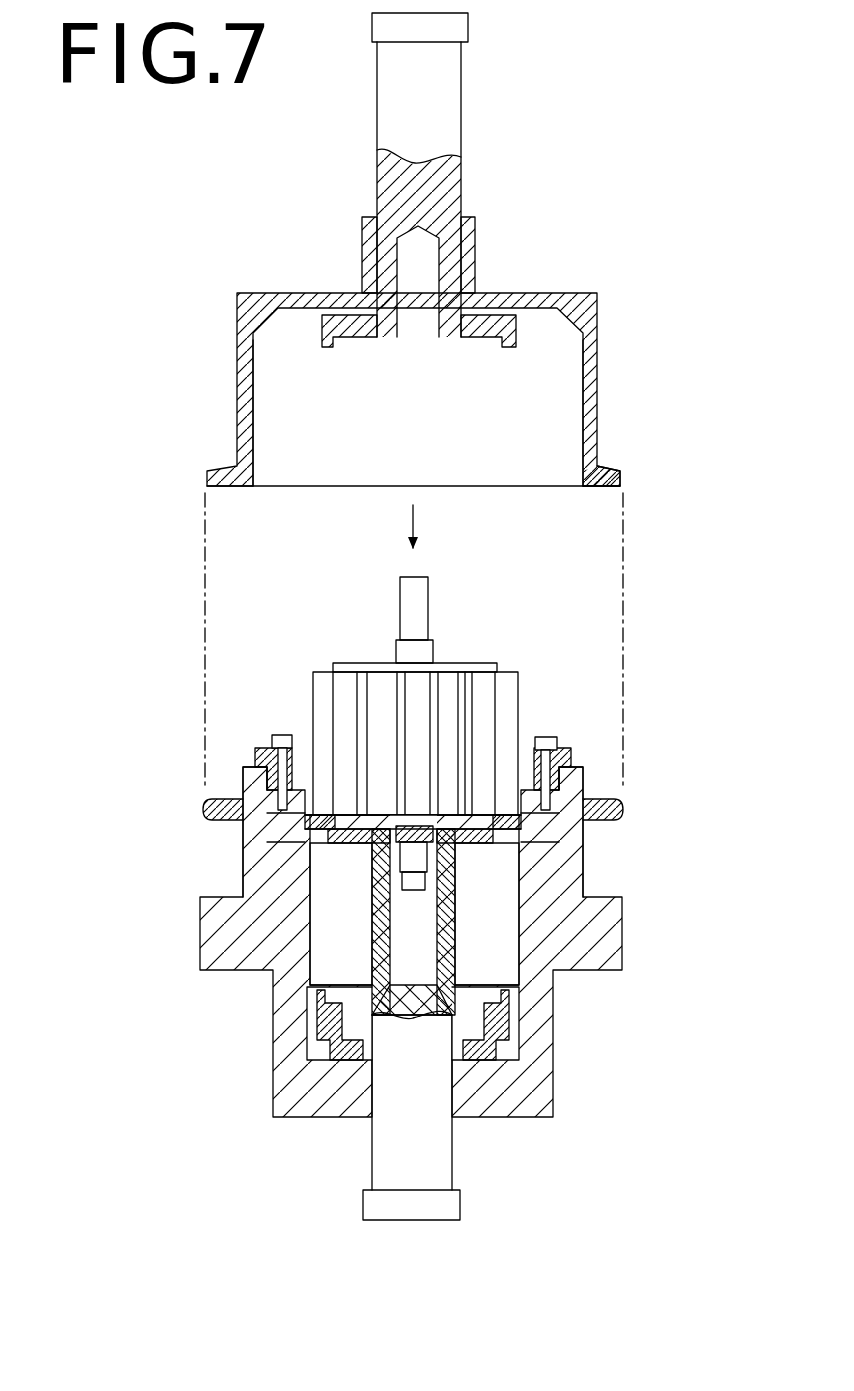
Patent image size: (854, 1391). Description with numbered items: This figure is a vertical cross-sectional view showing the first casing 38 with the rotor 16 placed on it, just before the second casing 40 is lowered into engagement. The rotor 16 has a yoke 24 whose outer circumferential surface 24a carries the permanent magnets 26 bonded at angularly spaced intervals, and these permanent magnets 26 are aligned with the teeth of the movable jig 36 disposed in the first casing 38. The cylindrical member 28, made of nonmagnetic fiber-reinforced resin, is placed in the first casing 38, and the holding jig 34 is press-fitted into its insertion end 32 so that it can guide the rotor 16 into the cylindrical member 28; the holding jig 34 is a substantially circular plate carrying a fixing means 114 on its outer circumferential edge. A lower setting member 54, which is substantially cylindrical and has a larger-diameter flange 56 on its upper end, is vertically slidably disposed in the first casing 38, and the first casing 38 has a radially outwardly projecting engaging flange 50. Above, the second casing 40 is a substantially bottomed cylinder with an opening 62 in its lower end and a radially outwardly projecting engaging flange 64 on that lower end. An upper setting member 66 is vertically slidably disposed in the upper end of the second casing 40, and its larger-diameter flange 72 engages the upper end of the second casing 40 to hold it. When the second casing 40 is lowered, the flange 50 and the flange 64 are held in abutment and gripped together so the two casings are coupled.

The upper setting member 66 is at (448, 119).
The second casing 40 is at (622, 316).
The engaging flange 64 is at (622, 469).
The opening 62 is at (553, 467).
The larger-diameter flange 72 is at (492, 330).
The rotor 16 is at (378, 688).
The permanent magnets 26 is at (345, 703).
The yoke 24 is at (372, 660).
The outer circumferential surface 24a is at (463, 687).
The cylindrical member 28 is at (397, 942).
The movable jig 36 is at (321, 846).
The larger-diameter flange 56 is at (475, 846).
The insertion end 32 is at (521, 829).
The holding jig 34 is at (243, 826).
The engaging flange 50 is at (203, 808).
The first casing 38 is at (632, 832).
The fixing means 114 is at (579, 738).
The lower setting member 54 is at (384, 1133).